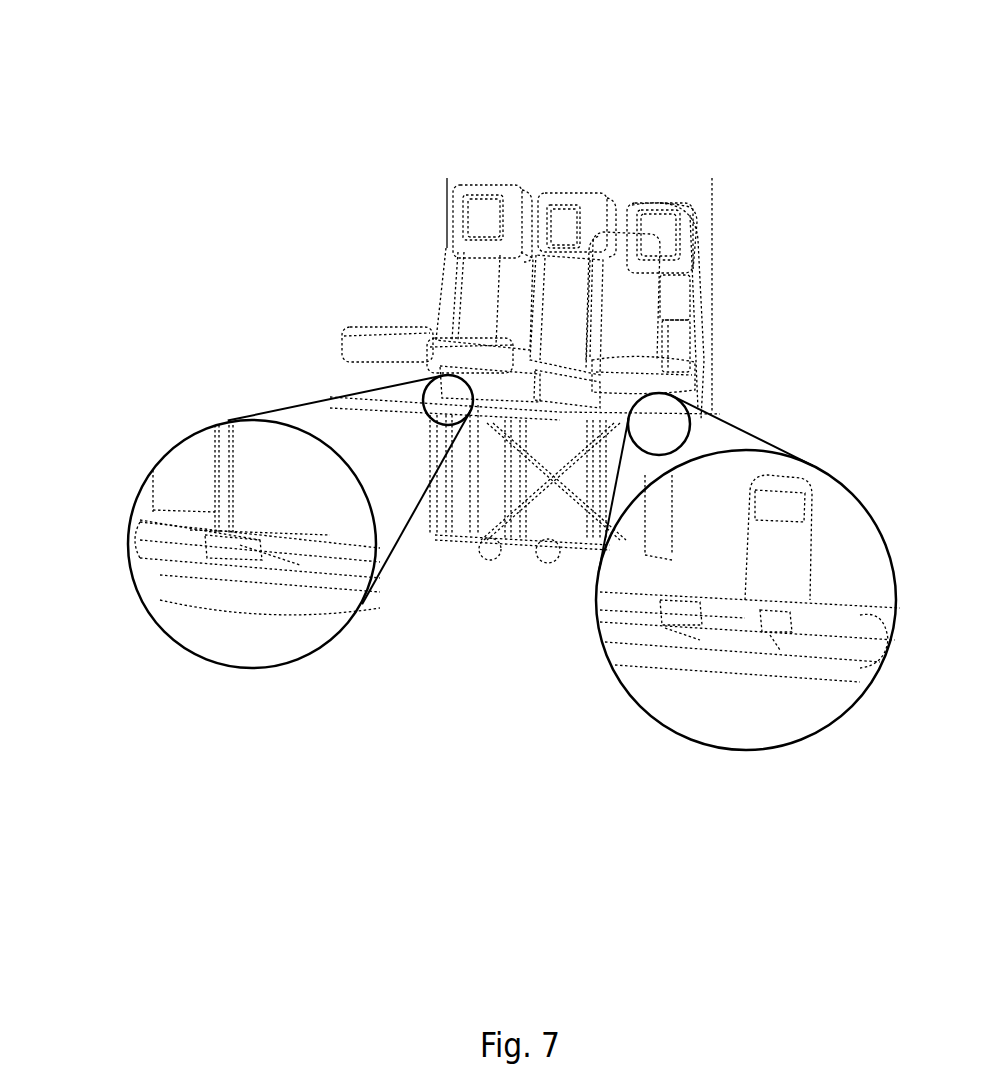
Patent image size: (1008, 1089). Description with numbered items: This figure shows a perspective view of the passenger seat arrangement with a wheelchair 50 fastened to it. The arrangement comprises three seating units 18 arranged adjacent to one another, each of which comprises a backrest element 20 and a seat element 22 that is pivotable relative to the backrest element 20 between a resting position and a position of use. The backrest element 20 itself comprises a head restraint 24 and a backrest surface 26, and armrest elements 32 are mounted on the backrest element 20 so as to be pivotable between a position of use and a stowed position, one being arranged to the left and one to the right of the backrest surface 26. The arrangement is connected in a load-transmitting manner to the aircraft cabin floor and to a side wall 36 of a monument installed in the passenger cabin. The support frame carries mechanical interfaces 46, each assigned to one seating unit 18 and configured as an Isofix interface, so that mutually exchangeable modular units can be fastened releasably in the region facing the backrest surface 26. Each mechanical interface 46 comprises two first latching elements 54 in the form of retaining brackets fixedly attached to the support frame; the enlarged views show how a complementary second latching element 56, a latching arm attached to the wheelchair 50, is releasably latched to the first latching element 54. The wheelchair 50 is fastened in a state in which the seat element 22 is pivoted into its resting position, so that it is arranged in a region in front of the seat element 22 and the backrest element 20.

The seating unit 18 is at (662, 195).
The backrest element 20 is at (700, 243).
The seat element 22 is at (686, 326).
The head restraint 24 is at (672, 214).
The backrest surface 26 is at (683, 282).
The armrest element 32 is at (677, 378).
The side wall 36 is at (447, 187).
The mechanical interface 46 is at (775, 620).
The wheelchair 50 is at (603, 315).
The first latching element 54 is at (776, 630).
The second latching element 56 is at (680, 612).